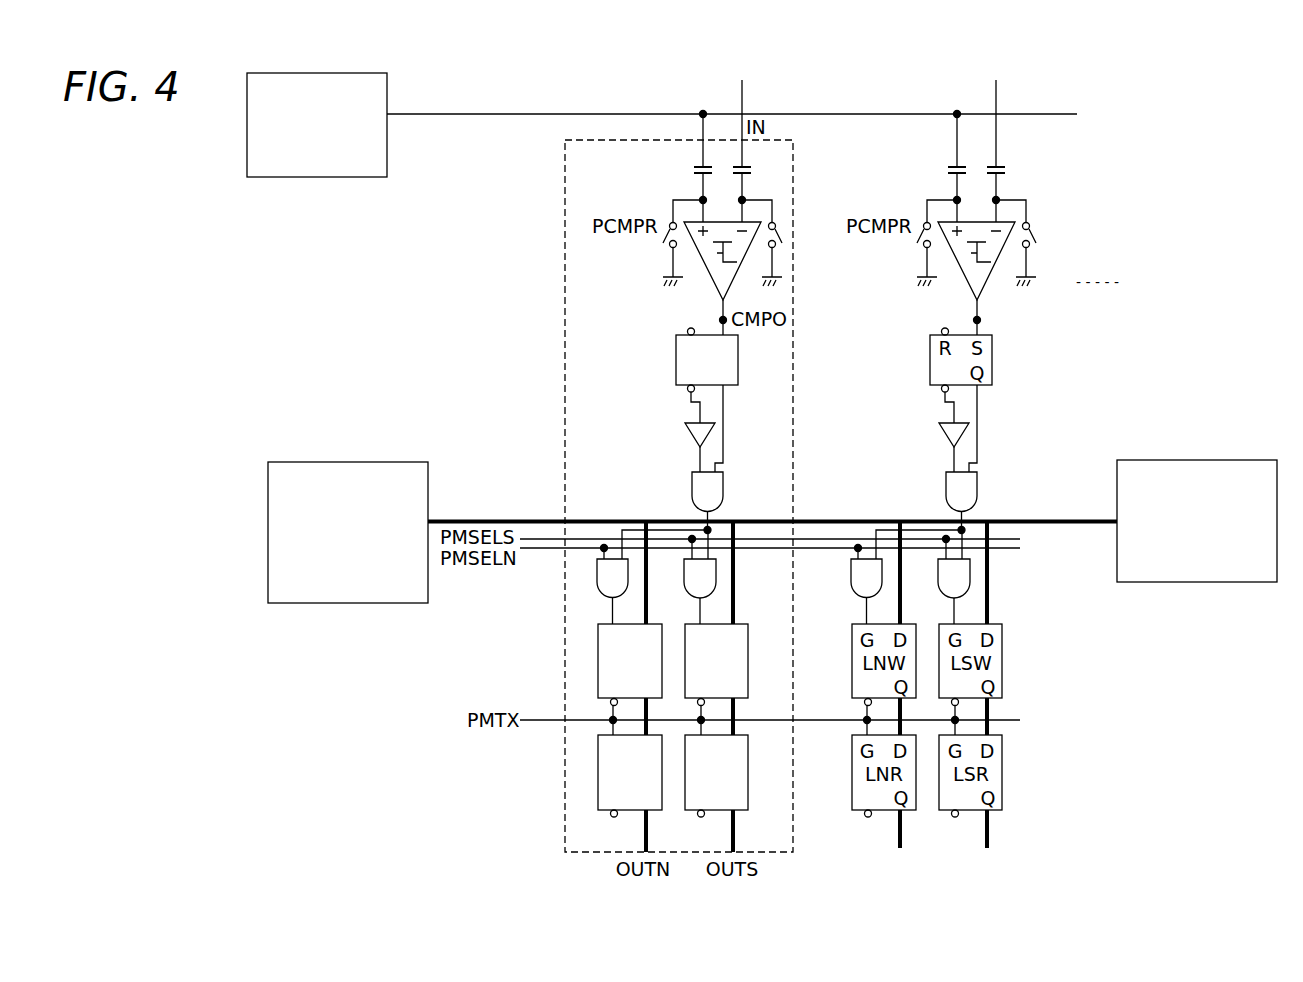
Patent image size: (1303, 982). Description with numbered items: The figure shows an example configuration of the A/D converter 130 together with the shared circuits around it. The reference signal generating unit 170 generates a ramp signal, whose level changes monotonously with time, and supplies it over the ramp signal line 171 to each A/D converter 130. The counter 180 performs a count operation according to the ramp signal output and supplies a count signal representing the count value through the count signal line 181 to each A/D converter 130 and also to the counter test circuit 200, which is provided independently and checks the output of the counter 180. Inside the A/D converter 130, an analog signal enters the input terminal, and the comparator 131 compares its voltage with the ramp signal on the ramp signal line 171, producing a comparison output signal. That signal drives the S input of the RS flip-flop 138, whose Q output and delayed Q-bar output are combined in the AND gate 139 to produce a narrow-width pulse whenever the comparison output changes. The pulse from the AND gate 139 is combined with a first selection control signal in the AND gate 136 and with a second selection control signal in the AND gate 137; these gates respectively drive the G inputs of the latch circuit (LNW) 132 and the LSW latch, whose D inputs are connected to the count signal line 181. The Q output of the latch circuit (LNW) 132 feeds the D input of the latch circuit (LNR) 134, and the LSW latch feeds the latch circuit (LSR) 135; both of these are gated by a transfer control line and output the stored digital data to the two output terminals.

The A/D converter 130 is at (793, 151).
The comparator 131 is at (714, 287).
The latch circuit (LNW) 132 is at (598, 660).
The latch circuit (LNR) 134 is at (598, 771).
The latch circuit (LSR) 135 is at (748, 767).
The AND gate 136 is at (597, 583).
The AND gate 137 is at (716, 575).
The RS flip-flop 138 is at (676, 360).
The AND gate 139 is at (692, 487).
The reference signal generating unit 170 is at (338, 177).
The ramp signal line 171 is at (455, 113).
The counter 180 is at (362, 462).
The count signal line 181 is at (450, 520).
The counter test circuit 200 is at (1218, 460).